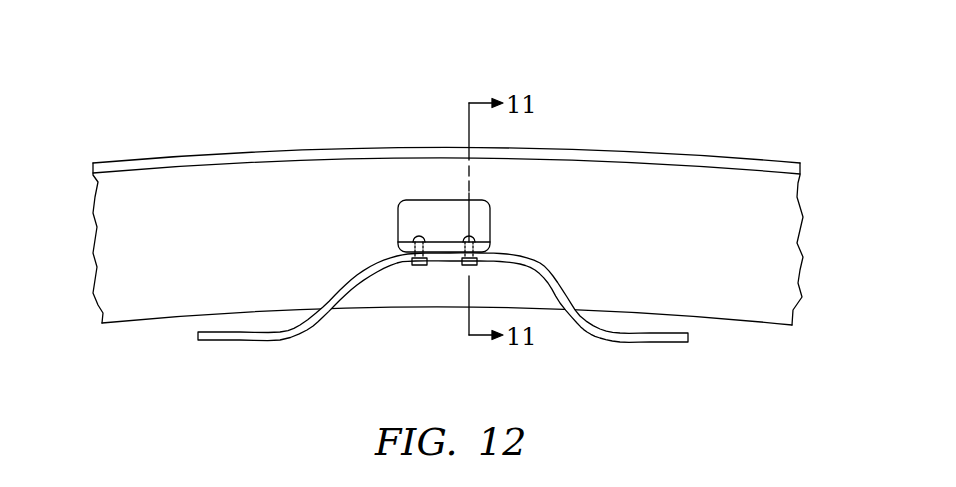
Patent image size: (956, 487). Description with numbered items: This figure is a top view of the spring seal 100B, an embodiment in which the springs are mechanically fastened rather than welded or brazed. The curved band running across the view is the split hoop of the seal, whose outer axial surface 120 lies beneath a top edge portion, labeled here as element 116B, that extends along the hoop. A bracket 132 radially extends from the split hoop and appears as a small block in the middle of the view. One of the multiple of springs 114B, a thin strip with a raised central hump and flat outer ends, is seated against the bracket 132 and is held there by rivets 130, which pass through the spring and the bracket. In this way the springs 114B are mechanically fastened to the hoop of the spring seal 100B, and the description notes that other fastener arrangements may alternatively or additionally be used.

The spring seal 100B is at (622, 98).
The rail top cap / upper flange 116B is at (523, 151).
The outer axial surface 120 is at (448, 195).
The springs 114B is at (318, 319).
The bracket 132 is at (474, 222).
The rivets 130 is at (418, 237).